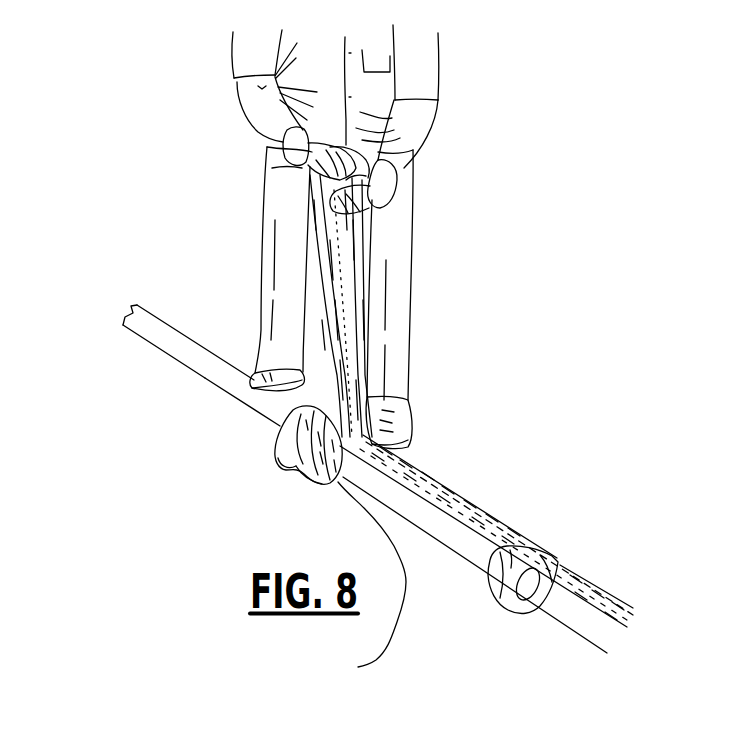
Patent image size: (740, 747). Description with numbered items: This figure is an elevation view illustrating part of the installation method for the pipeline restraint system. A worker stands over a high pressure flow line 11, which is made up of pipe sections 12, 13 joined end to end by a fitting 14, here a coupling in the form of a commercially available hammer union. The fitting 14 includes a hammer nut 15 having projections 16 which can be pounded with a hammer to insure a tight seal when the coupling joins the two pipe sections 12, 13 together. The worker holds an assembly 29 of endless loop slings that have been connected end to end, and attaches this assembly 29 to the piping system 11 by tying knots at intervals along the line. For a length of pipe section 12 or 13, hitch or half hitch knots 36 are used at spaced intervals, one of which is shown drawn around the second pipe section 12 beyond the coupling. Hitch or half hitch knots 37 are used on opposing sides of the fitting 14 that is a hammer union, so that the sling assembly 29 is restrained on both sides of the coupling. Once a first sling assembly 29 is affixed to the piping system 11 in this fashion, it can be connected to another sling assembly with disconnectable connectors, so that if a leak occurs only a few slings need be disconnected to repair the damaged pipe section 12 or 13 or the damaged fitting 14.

The high pressure flow line 11 is at (143, 335).
The pipe section 12 is at (557, 620).
The pipe section 13 is at (227, 394).
The fitting 14 is at (296, 466).
The hammer nut 15 is at (275, 441).
The projections 16 is at (277, 468).
The assembly of slings 29 is at (463, 500).
The hitch knot 36 is at (552, 552).
The hitch knot 37 is at (358, 667).